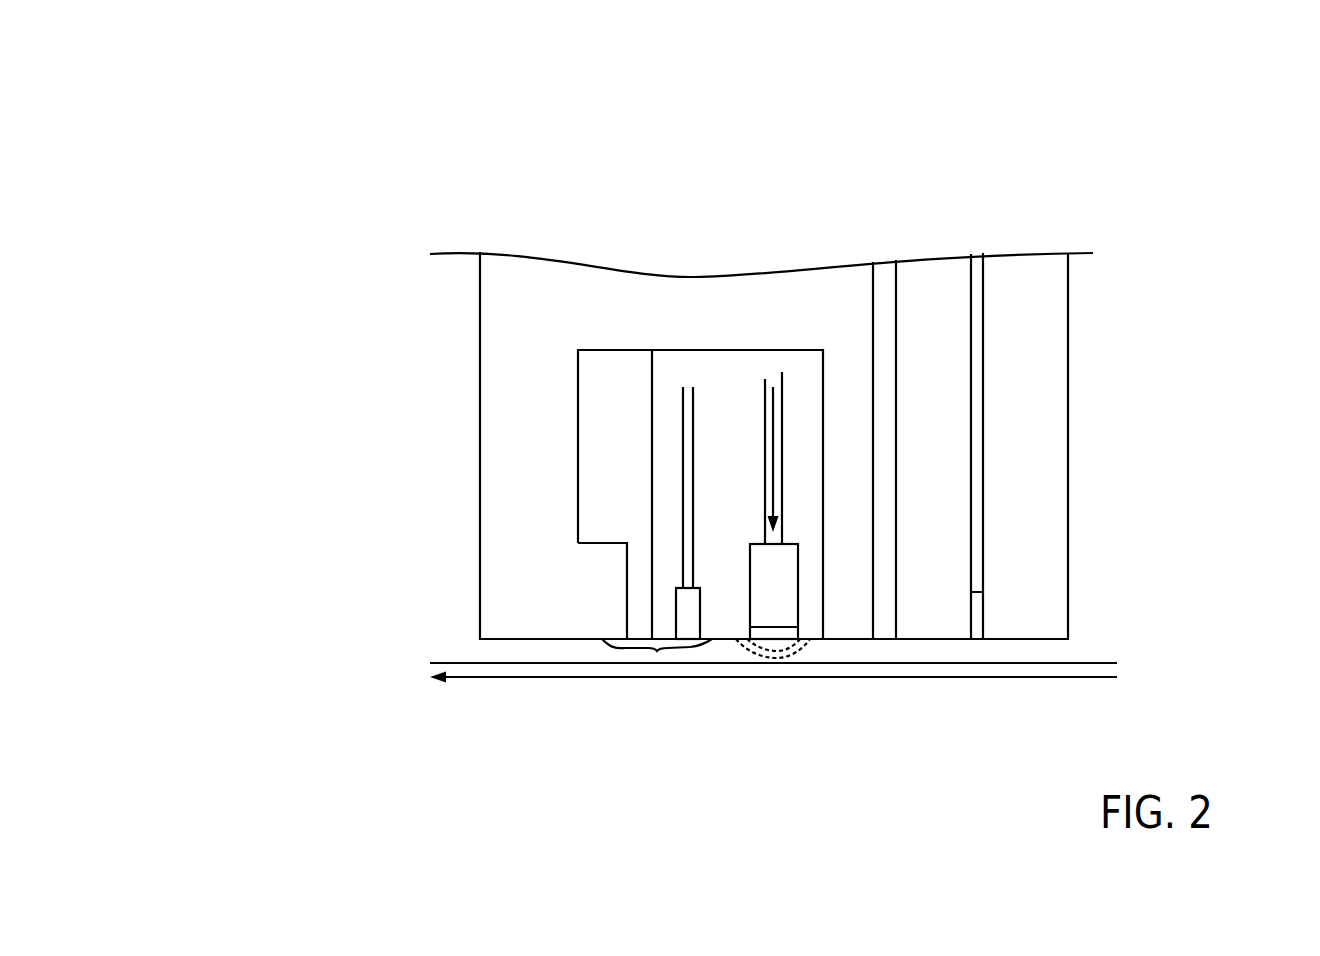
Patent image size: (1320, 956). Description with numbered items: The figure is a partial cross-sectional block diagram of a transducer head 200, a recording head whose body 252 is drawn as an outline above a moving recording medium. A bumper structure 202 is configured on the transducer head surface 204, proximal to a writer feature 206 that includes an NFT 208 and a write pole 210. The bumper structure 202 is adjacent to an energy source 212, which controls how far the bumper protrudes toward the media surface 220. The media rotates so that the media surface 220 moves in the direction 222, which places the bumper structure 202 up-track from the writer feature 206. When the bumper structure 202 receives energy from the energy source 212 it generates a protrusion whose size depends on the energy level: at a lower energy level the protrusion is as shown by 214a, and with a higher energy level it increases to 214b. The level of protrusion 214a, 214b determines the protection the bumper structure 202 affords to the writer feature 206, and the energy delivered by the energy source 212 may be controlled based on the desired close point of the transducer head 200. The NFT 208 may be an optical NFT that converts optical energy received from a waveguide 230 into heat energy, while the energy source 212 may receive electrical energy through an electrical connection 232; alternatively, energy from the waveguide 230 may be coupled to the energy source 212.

The transducer head 200 is at (190, 76).
The bumper structure 202 is at (812, 613).
The transducer head surface 204 is at (502, 651).
The writer feature 206 is at (660, 667).
The NFT 208 is at (704, 654).
The write pole 210 is at (630, 654).
The energy source 212 is at (812, 536).
The protrusion at lower energy level 214a is at (811, 660).
The protrusion at higher energy level 214b is at (782, 676).
The media surface 220 is at (968, 678).
The direction of media surface movement 222 is at (1091, 693).
The waveguide 230 is at (668, 478).
The electrical connection 232 is at (750, 427).
The housing 252 is at (1166, 278).